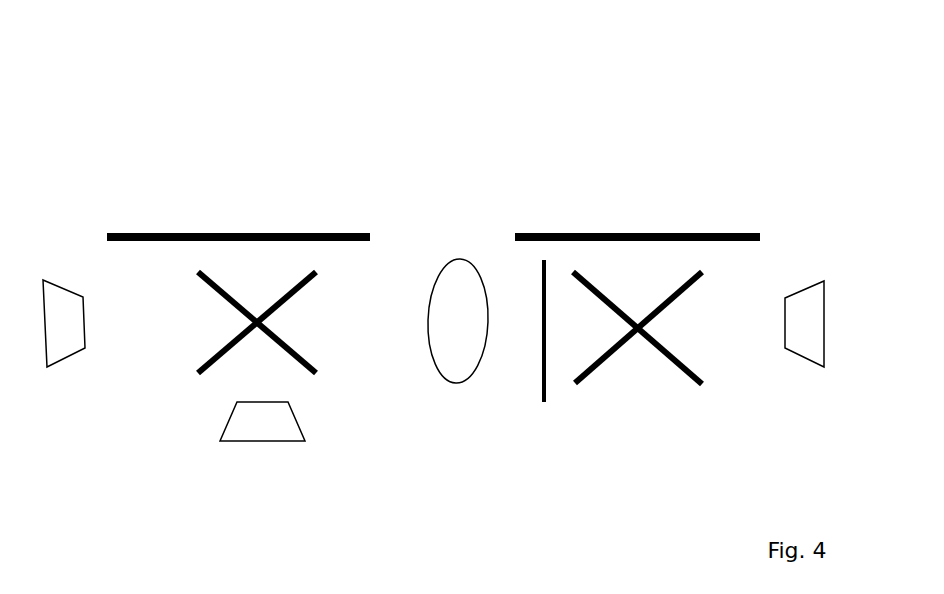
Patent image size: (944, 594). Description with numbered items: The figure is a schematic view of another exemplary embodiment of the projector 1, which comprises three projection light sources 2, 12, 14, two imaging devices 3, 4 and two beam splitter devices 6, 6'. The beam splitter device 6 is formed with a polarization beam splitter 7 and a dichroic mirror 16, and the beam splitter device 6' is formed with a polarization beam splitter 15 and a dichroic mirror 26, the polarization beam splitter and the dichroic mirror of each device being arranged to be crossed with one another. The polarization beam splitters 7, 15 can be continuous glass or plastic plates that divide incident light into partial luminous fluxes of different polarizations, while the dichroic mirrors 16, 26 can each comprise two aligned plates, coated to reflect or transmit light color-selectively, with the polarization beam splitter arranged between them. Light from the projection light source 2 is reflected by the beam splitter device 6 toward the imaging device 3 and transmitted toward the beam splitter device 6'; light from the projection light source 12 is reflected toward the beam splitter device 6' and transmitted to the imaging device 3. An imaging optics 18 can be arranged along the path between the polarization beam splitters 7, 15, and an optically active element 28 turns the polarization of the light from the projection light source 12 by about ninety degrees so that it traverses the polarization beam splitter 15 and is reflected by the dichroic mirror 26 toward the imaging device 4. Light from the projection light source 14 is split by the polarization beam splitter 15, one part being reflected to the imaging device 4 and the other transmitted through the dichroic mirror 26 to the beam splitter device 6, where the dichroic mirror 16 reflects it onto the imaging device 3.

The projector 1 is at (492, 126).
The projection light source 2 is at (62, 381).
The imaging device 3 is at (121, 214).
The imaging device 4 is at (684, 224).
The beam splitter device 6 is at (236, 295).
The beam splitter device 6' is at (713, 355).
The polarization beam splitter 7 is at (295, 292).
The projection light source 12 is at (280, 447).
The projection light source 14 is at (801, 368).
The polarization beam splitter 15 is at (680, 367).
The dichroic mirror 16 is at (234, 292).
The imaging optics 18 is at (450, 385).
The dichroic mirror 26 is at (668, 303).
The optically active element 28 is at (543, 313).